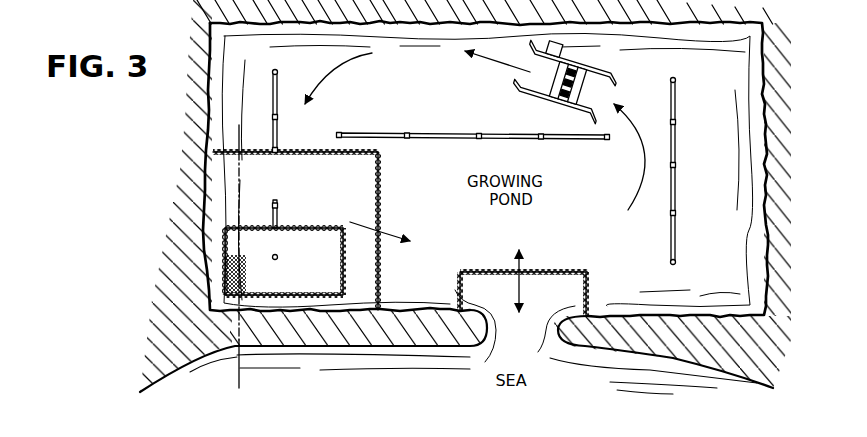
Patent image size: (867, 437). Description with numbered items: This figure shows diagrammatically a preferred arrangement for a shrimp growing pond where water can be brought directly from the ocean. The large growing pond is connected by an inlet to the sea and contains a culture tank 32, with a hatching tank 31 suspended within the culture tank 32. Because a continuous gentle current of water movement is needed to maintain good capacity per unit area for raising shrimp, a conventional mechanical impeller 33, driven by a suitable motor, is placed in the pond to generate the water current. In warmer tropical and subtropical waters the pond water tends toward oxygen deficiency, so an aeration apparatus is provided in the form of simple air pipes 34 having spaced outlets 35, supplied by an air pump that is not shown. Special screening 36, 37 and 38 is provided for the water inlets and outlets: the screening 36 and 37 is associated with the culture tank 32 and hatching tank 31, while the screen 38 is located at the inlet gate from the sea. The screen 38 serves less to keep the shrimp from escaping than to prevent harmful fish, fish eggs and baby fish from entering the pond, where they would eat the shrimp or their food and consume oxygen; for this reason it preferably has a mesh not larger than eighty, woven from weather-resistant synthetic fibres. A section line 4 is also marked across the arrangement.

The section line 4- 4 is at (239, 125).
The hatching tank 31 is at (343, 268).
The culture tank 32 is at (380, 207).
The mechanical impeller 33 is at (561, 82).
The air pipes 34 is at (279, 95).
The spaced outlets 35 is at (272, 117).
The screening 36 is at (294, 150).
The screening 37 is at (306, 227).
The screen 38 is at (556, 271).